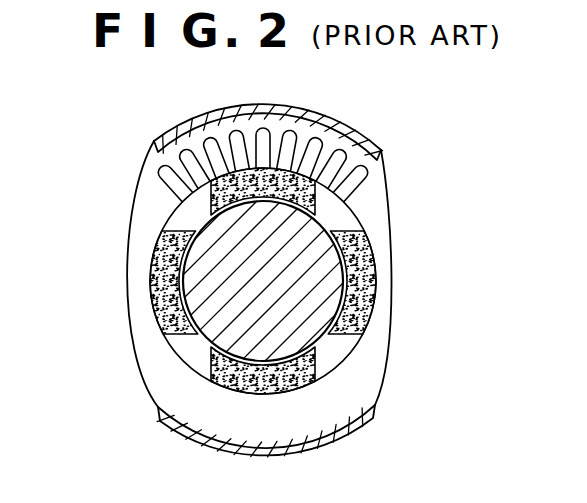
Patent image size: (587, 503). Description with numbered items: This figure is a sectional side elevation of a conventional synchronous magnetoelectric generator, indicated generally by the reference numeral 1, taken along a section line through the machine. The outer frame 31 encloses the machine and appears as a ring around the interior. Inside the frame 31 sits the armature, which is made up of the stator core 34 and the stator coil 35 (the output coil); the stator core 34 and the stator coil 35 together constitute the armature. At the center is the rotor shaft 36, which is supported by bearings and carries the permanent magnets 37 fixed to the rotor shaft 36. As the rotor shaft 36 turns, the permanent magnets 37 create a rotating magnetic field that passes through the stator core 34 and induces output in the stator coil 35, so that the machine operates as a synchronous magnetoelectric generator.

The motor 1 is at (113, 290).
The frame 31 is at (338, 124).
The stator core 34 is at (188, 147).
The stator coil 35 is at (170, 178).
The rotor shaft 36 is at (312, 318).
The permanent magnets 37 is at (274, 197).